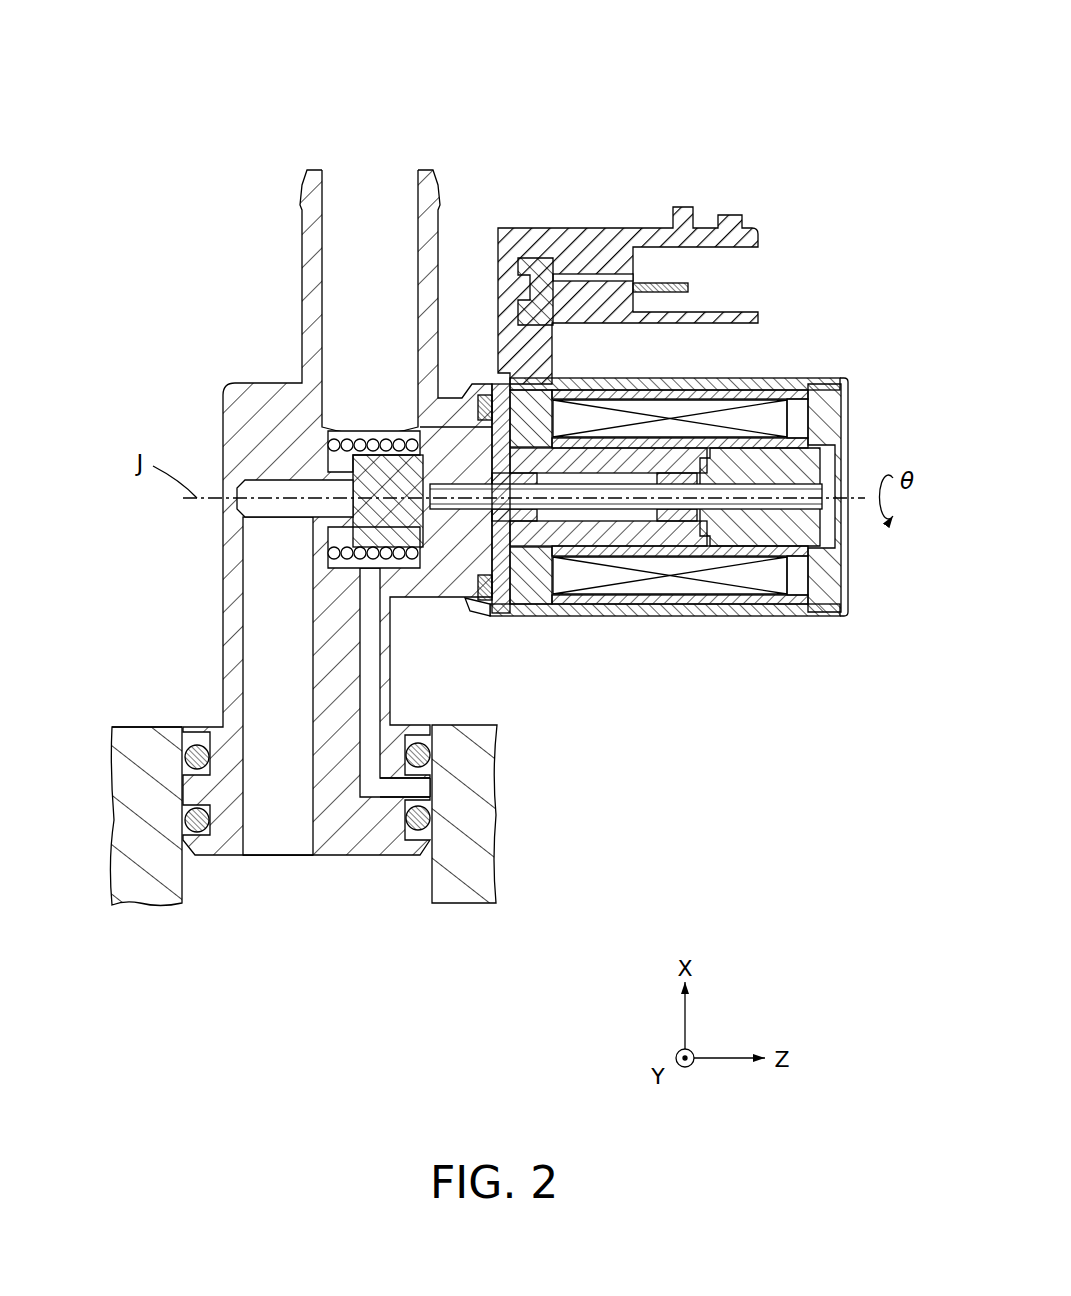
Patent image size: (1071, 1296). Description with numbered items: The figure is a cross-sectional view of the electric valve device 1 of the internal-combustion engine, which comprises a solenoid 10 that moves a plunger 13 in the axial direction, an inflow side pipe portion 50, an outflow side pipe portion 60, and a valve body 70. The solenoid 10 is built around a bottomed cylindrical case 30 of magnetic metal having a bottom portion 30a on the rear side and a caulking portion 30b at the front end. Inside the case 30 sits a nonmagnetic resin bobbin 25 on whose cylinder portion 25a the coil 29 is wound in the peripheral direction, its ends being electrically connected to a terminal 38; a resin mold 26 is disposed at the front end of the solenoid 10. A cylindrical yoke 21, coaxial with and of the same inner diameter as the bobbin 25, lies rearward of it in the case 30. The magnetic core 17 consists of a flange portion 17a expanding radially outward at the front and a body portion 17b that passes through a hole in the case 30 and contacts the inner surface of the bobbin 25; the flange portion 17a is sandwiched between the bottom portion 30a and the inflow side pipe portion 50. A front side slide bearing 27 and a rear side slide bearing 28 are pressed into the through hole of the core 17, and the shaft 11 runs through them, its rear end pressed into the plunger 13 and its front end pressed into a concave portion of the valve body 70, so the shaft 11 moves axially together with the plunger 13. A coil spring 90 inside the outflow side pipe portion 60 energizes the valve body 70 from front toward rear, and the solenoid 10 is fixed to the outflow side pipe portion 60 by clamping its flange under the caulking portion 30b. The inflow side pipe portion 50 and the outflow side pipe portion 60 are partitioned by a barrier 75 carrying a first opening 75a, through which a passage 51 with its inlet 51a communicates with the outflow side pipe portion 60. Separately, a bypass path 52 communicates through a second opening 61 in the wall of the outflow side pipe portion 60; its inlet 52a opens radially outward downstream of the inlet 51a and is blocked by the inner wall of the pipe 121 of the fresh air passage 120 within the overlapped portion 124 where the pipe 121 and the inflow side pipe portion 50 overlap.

The electric valve device 1 is at (753, 90).
The solenoid 10 is at (670, 449).
The shaft 11 is at (612, 490).
The plunger 13 is at (825, 462).
The core 17 is at (505, 551).
The flange portion 17a is at (482, 612).
The body portion 17b is at (588, 552).
The yoke 21 is at (827, 614).
The bobbin 25 is at (650, 560).
The cylinder portion 25a is at (637, 553).
The mold 26 is at (620, 227).
The front side slide bearing 27 is at (523, 520).
The rear side slide bearing 28 is at (657, 520).
The coil 29 is at (672, 590).
The case 30 is at (670, 562).
The bottom portion 30a is at (850, 578).
The caulking portion 30b is at (468, 609).
The terminal 38 is at (680, 282).
The inflow side pipe portion 50 is at (310, 573).
The passage 51 is at (278, 680).
The inlet 51a is at (272, 857).
The bypass path 52 is at (378, 798).
The inlet 52a is at (432, 787).
The outflow side pipe portion 60 is at (298, 259).
The second opening 61 is at (368, 588).
The valve body 70 is at (442, 420).
The barrier 75 is at (289, 448).
The first opening 75a is at (338, 490).
The coil spring 90 is at (365, 440).
The fresh air passage 120 is at (109, 770).
The pipe 121 is at (138, 727).
The overlapped portion 124 is at (505, 905).